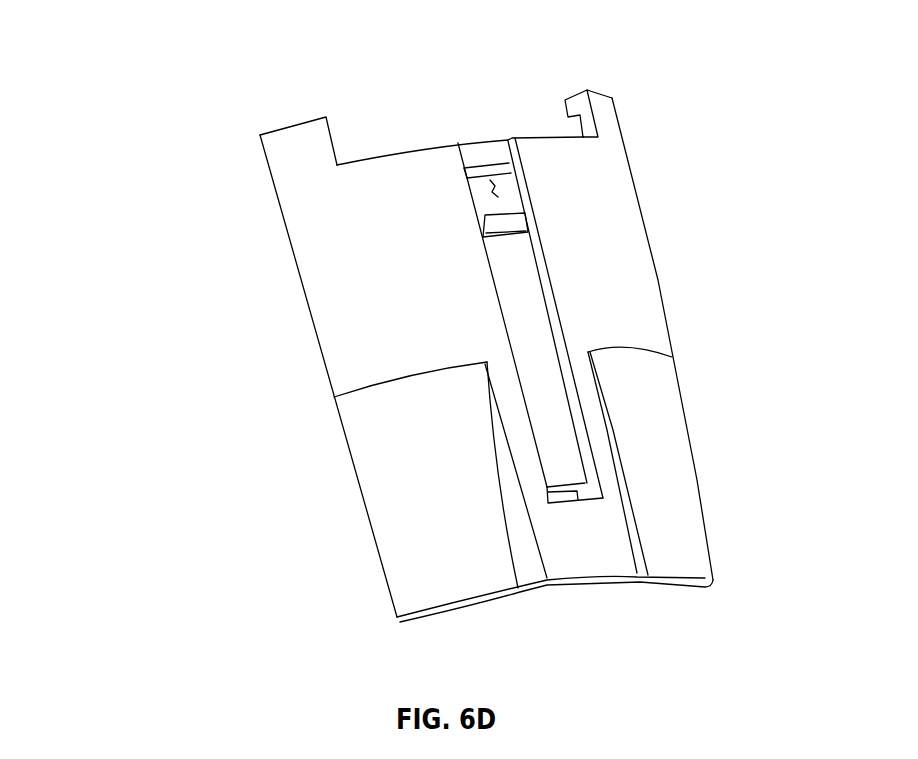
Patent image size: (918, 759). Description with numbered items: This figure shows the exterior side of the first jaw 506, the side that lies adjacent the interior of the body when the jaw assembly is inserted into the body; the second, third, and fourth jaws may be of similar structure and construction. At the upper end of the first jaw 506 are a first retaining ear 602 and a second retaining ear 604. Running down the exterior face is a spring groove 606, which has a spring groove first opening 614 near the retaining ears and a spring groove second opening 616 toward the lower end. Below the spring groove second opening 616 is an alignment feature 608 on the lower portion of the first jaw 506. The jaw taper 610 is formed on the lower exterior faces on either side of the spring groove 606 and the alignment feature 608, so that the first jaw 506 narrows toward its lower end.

The first jaw 506 is at (340, 428).
The first retaining ear 602 is at (600, 127).
The second retaining ear 604 is at (303, 187).
The spring groove 606 is at (503, 275).
The alignment feature 608 is at (592, 553).
The jaw taper 610 is at (656, 438).
The spring groove first opening 614 is at (490, 197).
The spring groove second opening 616 is at (590, 492).